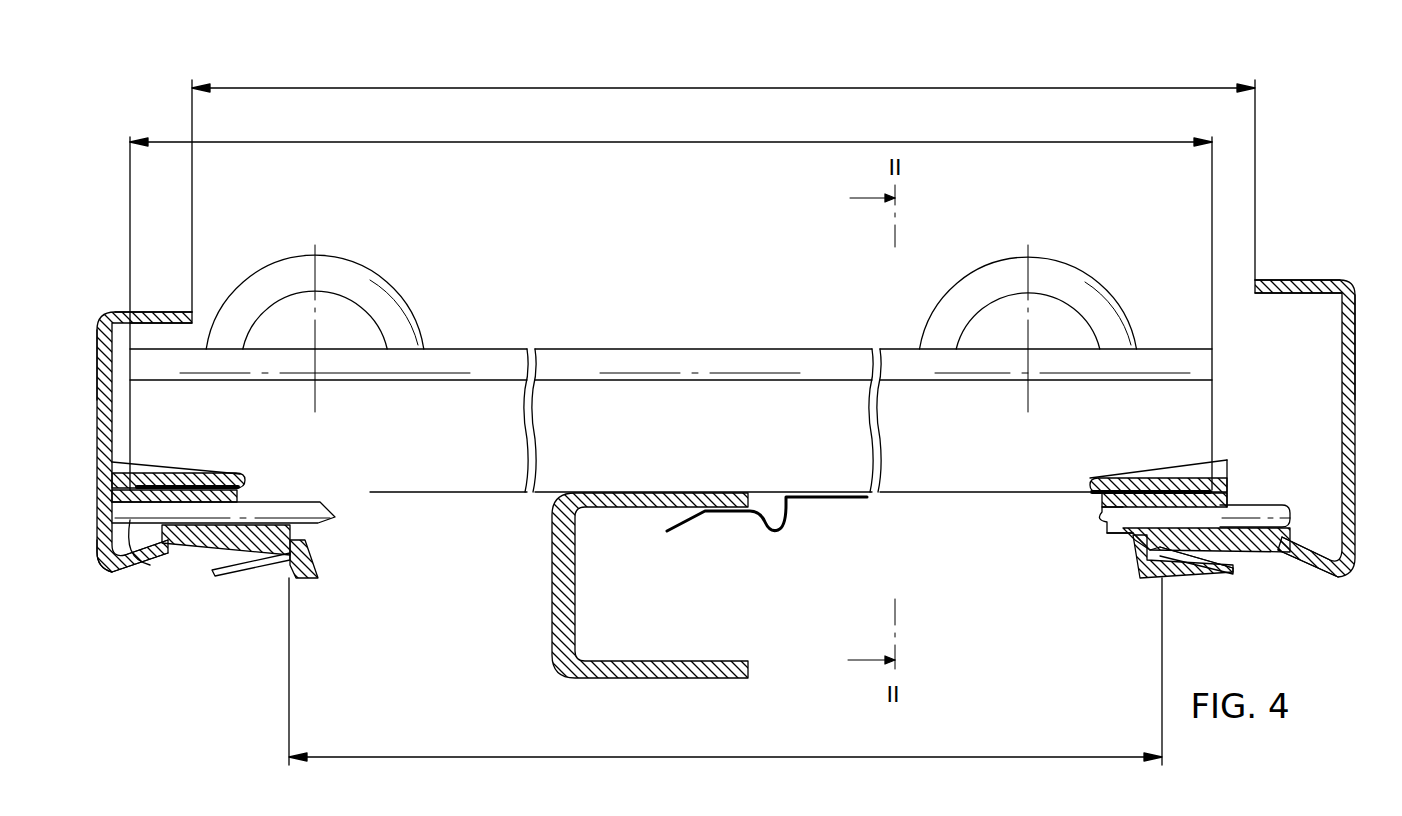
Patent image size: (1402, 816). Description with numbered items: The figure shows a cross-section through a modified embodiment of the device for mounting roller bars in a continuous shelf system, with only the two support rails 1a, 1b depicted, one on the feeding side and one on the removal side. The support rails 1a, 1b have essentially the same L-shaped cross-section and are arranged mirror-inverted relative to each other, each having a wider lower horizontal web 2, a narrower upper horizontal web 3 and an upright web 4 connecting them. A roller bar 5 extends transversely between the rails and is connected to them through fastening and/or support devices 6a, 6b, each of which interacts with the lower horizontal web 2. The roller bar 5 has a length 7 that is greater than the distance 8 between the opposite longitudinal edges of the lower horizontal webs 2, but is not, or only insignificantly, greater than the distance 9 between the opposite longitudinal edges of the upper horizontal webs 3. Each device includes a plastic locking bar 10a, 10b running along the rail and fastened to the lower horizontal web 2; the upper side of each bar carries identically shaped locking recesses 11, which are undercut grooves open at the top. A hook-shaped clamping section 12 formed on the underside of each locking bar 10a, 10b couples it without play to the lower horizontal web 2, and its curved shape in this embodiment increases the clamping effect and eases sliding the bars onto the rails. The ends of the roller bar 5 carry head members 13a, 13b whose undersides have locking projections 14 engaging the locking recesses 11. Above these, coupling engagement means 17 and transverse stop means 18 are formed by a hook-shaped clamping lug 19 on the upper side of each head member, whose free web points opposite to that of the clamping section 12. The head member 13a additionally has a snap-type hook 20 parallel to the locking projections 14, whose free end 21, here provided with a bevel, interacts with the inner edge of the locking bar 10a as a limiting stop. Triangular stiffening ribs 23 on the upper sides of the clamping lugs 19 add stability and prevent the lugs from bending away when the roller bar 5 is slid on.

The support rail 1a is at (1352, 420).
The support rail 1b is at (97, 412).
The lower horizontal web 2 is at (168, 555).
The upper horizontal web 3 is at (158, 312).
The upright web 4 is at (97, 345).
The roller bar 5 is at (415, 325).
The fastening and/or support device 6a is at (1225, 540).
The fastening and/or support device 6b is at (258, 535).
The length of the roller bars 7 is at (718, 142).
The distance between opposite longitudinal edges of the lower horizontal webs 8 is at (735, 757).
The distance between opposite longitudinal edges of the upper horizontal webs 9 is at (735, 88).
The locking bar 10a is at (1130, 550).
The locking bar 10b is at (310, 566).
The locking recesses 11 is at (322, 517).
The hook-shaped clamping section 12 is at (1197, 580).
The head member 13a is at (1240, 558).
The head member 13b is at (112, 496).
The locking projections 14 is at (132, 527).
The coupling engagement means 17 is at (155, 484).
The transverse stop means 18 is at (97, 552).
The hook-shaped clamping lug 19 is at (200, 475).
The snap-type hook 20 is at (1138, 560).
The free end of the snap-type hook 21 is at (245, 560).
The triangular stiffening ribs 23 is at (120, 456).